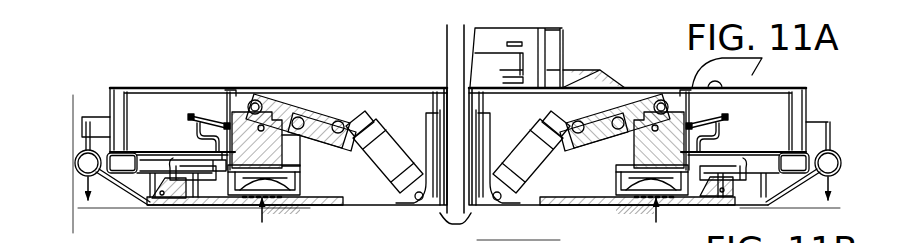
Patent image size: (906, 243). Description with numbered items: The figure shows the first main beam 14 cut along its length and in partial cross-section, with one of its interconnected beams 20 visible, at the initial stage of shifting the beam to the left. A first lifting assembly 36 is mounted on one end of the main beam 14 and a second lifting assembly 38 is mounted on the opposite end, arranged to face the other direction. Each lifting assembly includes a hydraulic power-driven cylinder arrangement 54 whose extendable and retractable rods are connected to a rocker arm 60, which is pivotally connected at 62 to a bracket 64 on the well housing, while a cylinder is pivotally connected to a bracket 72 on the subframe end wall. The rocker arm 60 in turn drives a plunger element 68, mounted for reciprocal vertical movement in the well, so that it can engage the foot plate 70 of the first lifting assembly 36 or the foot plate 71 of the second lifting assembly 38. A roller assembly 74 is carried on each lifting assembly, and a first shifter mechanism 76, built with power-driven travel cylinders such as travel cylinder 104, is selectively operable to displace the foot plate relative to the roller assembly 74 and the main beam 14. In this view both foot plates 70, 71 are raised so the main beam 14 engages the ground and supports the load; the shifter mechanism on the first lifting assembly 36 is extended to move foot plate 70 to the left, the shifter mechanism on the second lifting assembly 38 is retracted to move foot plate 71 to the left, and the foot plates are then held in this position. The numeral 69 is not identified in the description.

The first main beam 14 is at (88, 92).
The beam 20 is at (141, 98).
The first lifting assembly 36 is at (186, 103).
The second lifting assembly 38 is at (632, 74).
The hydraulic power-driven cylinder arrangement 54 is at (386, 117).
The rocker arm 60 is at (318, 115).
The pivot connection 62 is at (298, 118).
The bracket 64 is at (290, 147).
The plunger element 68 is at (250, 135).
The pivot arm 69 is at (266, 124).
The foot plate 70 is at (172, 206).
The foot plate 71 is at (590, 206).
The bracket 72 is at (425, 202).
The roller assembly 74 is at (271, 197).
The first shifter mechanism 76 is at (200, 180).
The travel cylinder 104 is at (193, 163).